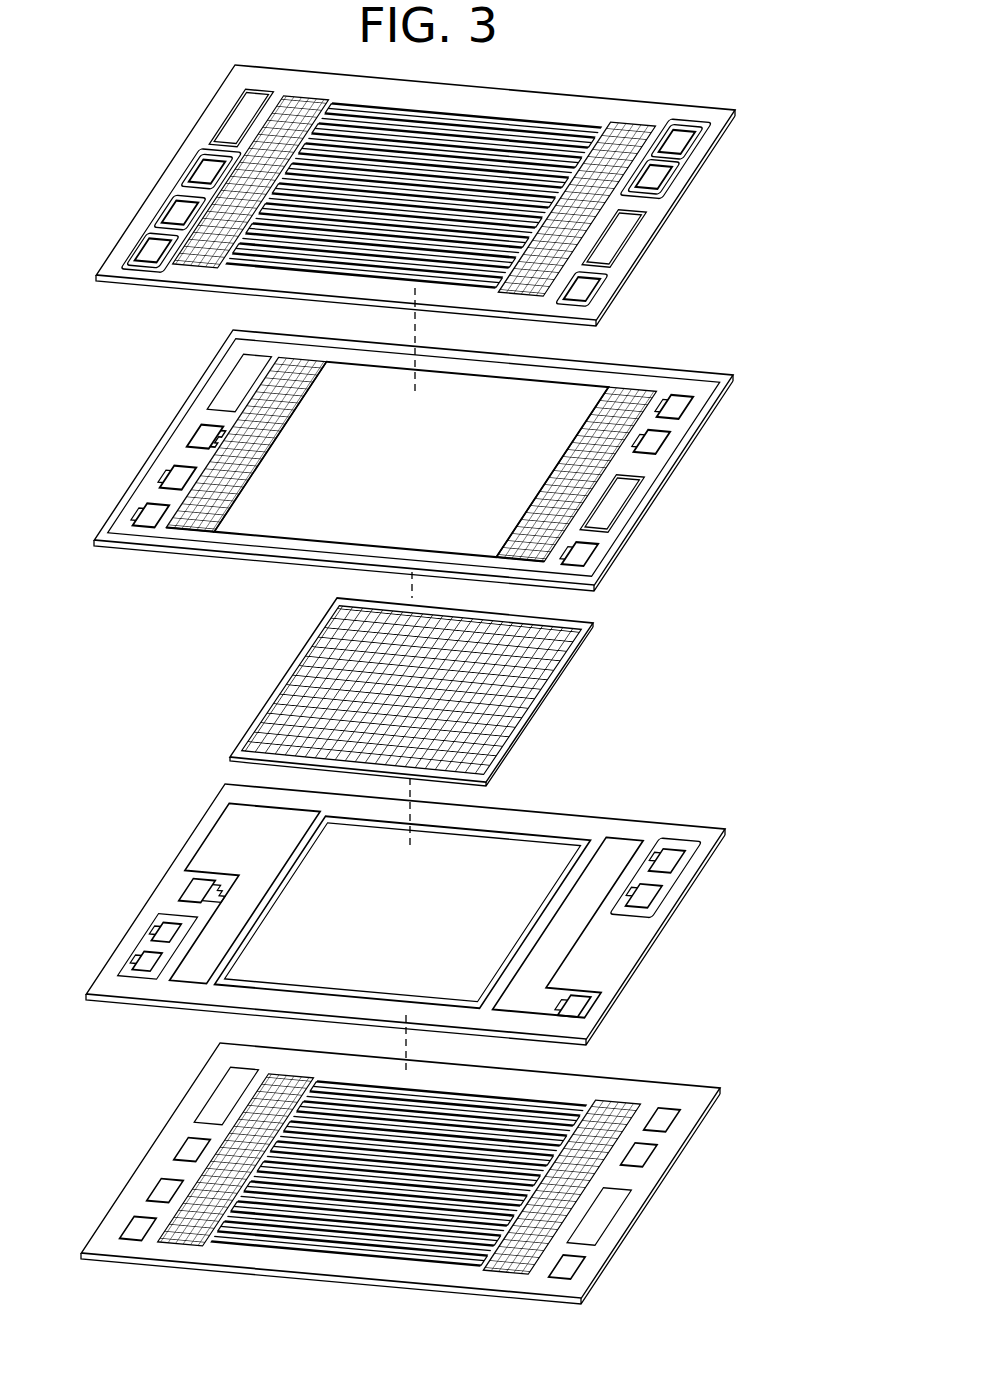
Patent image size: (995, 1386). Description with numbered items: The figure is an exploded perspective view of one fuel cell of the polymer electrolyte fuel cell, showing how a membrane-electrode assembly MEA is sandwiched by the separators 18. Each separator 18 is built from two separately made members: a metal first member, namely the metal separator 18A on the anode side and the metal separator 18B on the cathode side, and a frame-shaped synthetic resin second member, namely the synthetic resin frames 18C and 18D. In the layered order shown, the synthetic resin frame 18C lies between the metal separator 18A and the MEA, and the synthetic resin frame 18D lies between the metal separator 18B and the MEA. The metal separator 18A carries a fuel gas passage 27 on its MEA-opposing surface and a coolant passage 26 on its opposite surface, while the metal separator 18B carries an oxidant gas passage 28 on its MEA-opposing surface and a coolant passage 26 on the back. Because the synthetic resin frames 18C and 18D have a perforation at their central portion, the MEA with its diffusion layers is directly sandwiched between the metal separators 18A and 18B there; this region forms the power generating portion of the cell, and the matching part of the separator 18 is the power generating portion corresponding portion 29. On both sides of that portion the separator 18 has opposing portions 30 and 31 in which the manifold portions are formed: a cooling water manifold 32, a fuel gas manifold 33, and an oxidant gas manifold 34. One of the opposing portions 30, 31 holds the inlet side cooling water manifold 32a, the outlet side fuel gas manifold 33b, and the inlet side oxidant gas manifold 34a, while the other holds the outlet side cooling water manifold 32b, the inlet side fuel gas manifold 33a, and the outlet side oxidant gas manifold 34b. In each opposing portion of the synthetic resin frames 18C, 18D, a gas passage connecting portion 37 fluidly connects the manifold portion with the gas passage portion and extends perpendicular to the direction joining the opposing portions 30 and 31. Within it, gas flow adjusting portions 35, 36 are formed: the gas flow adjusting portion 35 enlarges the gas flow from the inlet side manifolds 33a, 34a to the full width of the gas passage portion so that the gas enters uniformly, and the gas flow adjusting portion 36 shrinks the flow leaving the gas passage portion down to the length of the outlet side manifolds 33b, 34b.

The separator 18 is at (161, 178).
The metal separator 18A is at (614, 1250).
The metal separator 18B is at (688, 183).
The synthetic resin frame 18C is at (634, 972).
The synthetic resin frame 18D is at (670, 470).
The coolant passage 26 is at (350, 206).
The fuel gas passage 27 is at (225, 1163).
The oxidant gas passage 28 is at (428, 305).
The power generating portion corresponding portion 29 is at (370, 1125).
The opposing portion 30 is at (623, 397).
The opposing portion 31 is at (300, 353).
The cooling water manifold 32 is at (618, 495).
The inlet side cooling water manifold 32a is at (618, 238).
The outlet side cooling water manifold 32b is at (240, 121).
The fuel gas manifold 33 is at (195, 432).
The inlet side fuel gas manifold 33a is at (200, 435).
The outlet side fuel gas manifold 33b is at (583, 560).
The oxidant gas manifold 34 is at (150, 515).
The inlet side oxidant gas manifold 34a is at (660, 415).
The outlet side oxidant gas manifold 34b is at (170, 480).
The gas flow adjusting portion 35 is at (521, 553).
The gas flow adjusting portion 36 is at (181, 522).
The gas passage connecting portion 37 is at (240, 463).
The membrane-electrode assembly MEA is at (555, 682).